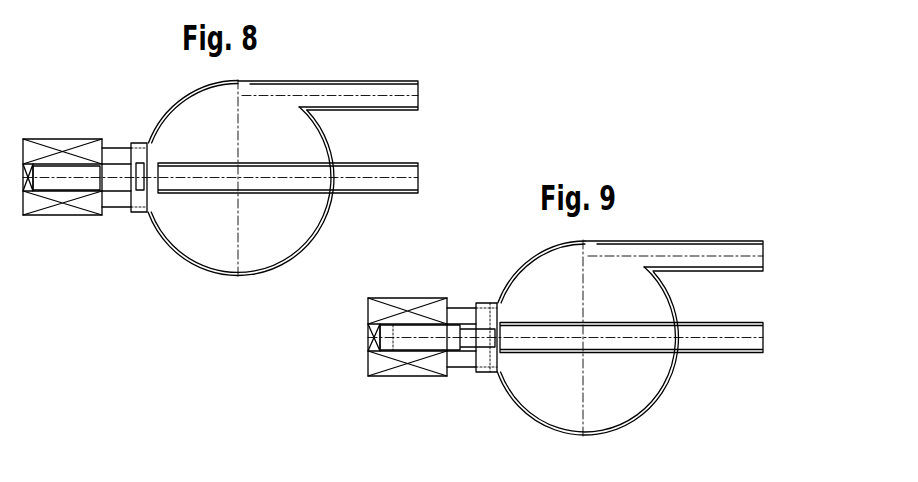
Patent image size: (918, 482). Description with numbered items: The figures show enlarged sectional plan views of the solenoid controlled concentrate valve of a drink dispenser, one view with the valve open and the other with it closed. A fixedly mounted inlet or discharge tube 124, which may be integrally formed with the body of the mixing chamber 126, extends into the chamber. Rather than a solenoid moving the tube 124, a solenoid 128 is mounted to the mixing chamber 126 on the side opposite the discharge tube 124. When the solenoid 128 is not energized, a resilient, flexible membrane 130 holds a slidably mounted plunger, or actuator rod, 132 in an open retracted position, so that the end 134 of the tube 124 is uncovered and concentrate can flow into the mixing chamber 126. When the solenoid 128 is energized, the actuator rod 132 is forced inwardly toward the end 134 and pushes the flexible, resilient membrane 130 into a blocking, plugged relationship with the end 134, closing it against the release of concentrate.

In FIG. 8, the discharge tube 124 is at (353, 163).
In FIG. 9, the discharge tube 124 is at (700, 322).
In FIG. 8, the mixing chamber 126 is at (336, 81).
In FIG. 9, the mixing chamber 126 is at (657, 240).
In FIG. 8, the solenoid 128 is at (61, 141).
In FIG. 9, the solenoid 128 is at (387, 298).
In FIG. 8, the flexible membrane 130 is at (157, 165).
In FIG. 9, the flexible membrane 130 is at (508, 320).
In FIG. 8, the actuator rod 132 is at (63, 191).
In FIG. 9, the actuator rod 132 is at (470, 351).
In FIG. 8, the end of the tube 134 is at (156, 219).
In FIG. 9, the end of the tube 134 is at (497, 375).